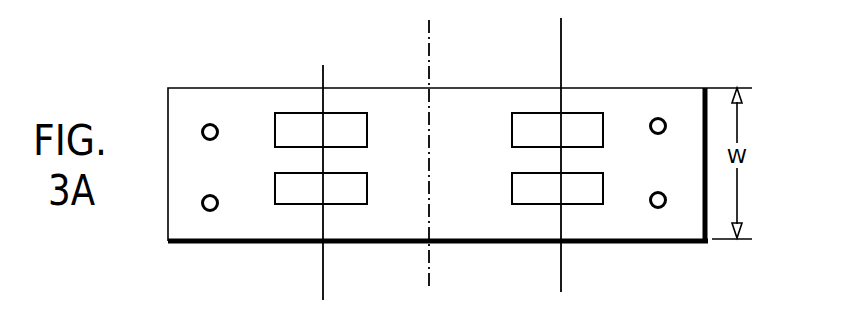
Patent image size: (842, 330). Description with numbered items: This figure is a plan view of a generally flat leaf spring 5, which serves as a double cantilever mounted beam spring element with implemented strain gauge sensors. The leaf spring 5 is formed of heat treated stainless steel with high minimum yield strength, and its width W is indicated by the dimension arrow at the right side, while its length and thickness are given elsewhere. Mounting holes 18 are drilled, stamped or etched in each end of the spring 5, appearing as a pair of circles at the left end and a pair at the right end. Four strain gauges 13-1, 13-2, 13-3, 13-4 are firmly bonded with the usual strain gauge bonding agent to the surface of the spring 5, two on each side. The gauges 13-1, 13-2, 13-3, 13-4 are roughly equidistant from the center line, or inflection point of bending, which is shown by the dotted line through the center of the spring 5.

The leaf spring 5 is at (283, 100).
The mounting holes 18 is at (203, 197).
The strain gauge 13-1 is at (345, 113).
The strain gauge 13-2 is at (300, 205).
The strain gauge 13-3 is at (585, 110).
The strain gauge 13-4 is at (585, 205).